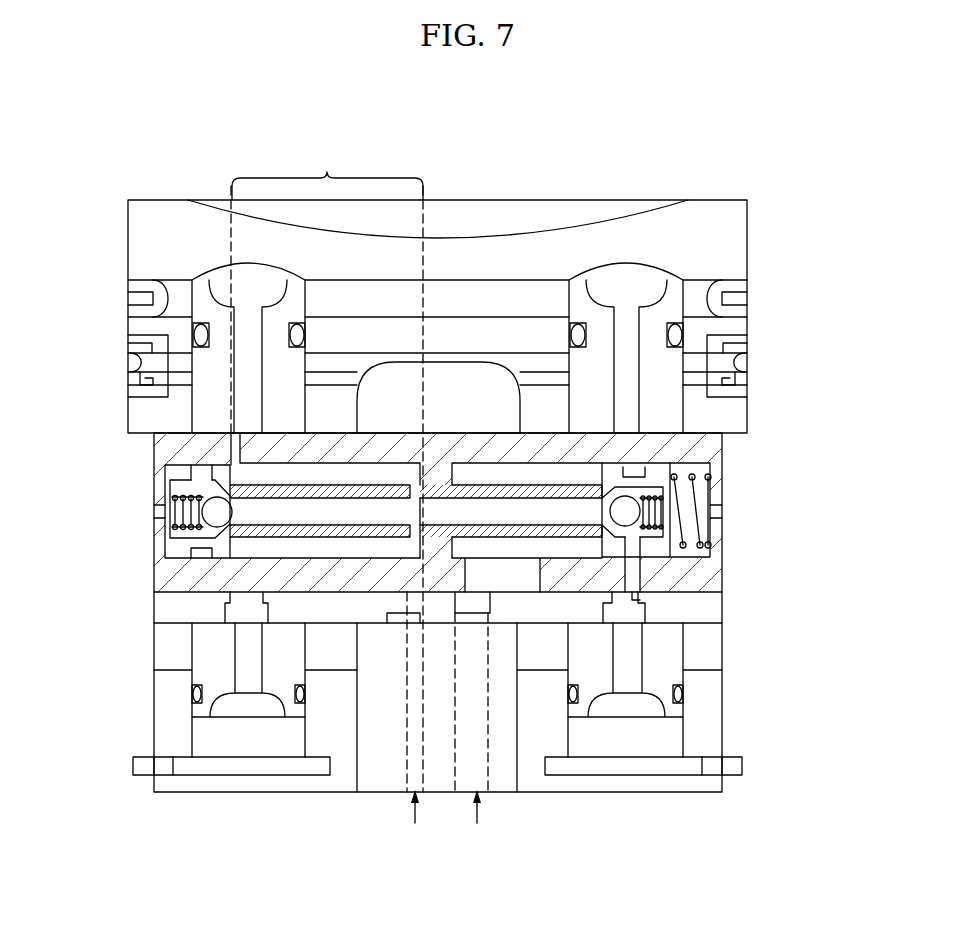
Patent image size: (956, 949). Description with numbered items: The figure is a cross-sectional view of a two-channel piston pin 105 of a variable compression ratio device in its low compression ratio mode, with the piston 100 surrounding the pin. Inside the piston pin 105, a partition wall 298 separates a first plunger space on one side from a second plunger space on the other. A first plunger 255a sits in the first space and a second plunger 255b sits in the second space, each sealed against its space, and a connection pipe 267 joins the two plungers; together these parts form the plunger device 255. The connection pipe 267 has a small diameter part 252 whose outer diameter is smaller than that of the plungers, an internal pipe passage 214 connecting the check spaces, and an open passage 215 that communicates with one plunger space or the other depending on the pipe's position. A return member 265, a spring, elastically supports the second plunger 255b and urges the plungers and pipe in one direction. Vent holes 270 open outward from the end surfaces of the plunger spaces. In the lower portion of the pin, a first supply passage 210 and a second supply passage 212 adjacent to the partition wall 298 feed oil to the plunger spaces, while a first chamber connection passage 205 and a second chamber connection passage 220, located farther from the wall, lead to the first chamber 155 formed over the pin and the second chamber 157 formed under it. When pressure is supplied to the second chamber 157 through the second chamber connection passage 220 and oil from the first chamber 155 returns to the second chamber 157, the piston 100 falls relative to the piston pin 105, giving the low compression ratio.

The piston 100 is at (732, 238).
The piston pin 105 is at (710, 578).
The first chamber 155 is at (650, 289).
The second chamber 157 is at (672, 737).
The first chamber connection passage 205 is at (232, 452).
The first supply passage 210 is at (413, 572).
The second supply passage 212 is at (463, 573).
The pipe passage 214 is at (547, 510).
The open passage 215 is at (415, 527).
The second chamber connection passage 220 is at (636, 600).
The small diameter part 252 is at (327, 467).
The check valve 255 is at (429, 548).
The first plunger 255a is at (165, 553).
The second plunger 255b is at (658, 546).
The return member 265 is at (712, 473).
The connection pipe 267 is at (257, 533).
The vent hole 270 is at (153, 512).
The partition wall 298 is at (437, 468).